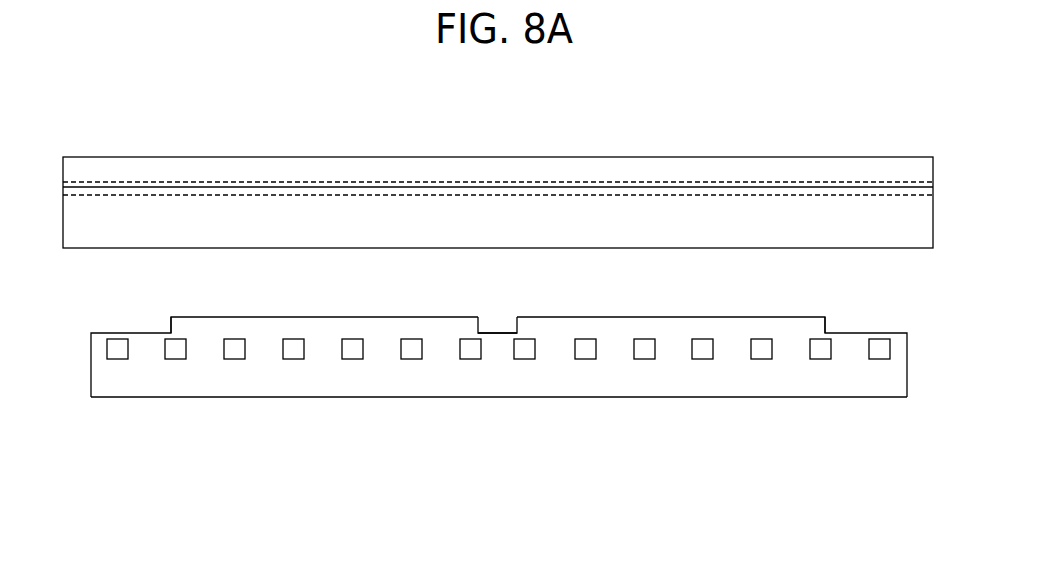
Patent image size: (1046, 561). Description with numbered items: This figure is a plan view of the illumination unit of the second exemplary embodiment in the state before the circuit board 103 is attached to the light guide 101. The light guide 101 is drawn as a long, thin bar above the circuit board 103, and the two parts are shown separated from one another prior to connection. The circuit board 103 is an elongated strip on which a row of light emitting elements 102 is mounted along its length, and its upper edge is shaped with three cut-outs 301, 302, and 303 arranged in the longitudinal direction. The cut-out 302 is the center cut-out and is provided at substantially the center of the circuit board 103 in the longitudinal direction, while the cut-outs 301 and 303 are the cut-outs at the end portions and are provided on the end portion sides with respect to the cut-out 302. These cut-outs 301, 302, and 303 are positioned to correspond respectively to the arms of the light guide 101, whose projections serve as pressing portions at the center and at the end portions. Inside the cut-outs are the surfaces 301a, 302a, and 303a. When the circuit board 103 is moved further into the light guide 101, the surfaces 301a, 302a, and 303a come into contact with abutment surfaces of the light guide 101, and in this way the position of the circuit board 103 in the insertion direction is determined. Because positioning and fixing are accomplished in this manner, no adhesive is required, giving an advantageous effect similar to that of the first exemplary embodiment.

The light guide 101 is at (399, 170).
The light emitting elements 102 is at (352, 359).
The circuit board 103 is at (375, 370).
The cut-out 301 is at (150, 332).
The surface 301a is at (157, 346).
The cut-out 302 is at (500, 323).
The surface 302a is at (497, 334).
The cut-out 303 is at (850, 326).
The surface 303a is at (823, 342).